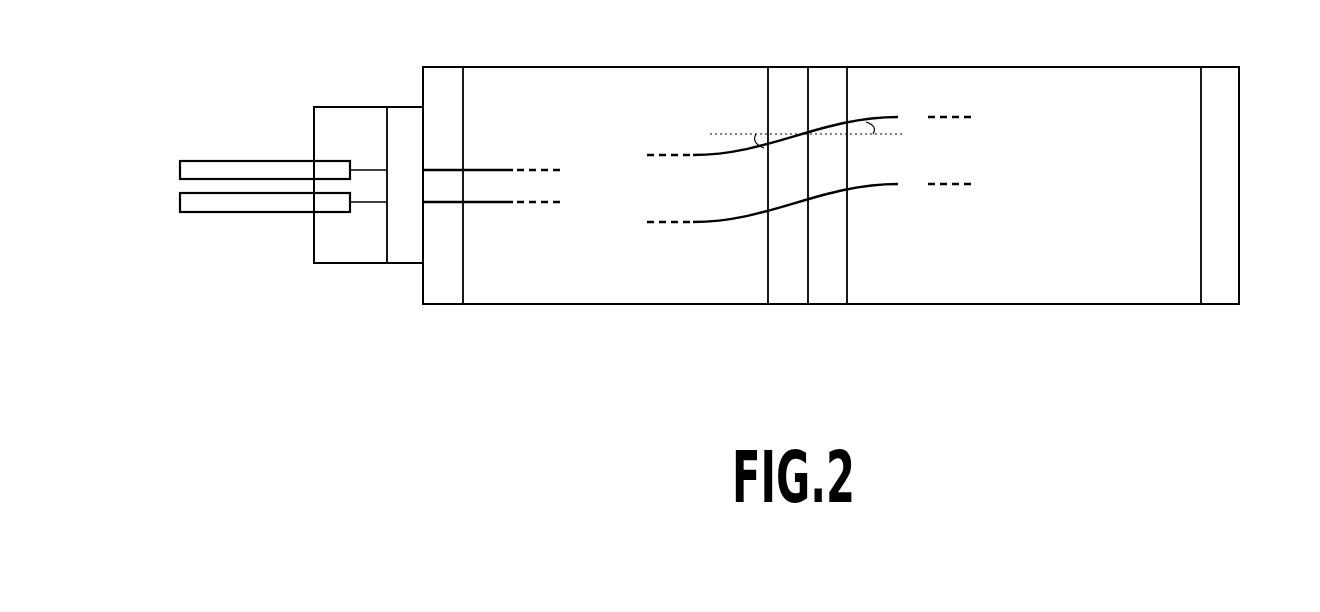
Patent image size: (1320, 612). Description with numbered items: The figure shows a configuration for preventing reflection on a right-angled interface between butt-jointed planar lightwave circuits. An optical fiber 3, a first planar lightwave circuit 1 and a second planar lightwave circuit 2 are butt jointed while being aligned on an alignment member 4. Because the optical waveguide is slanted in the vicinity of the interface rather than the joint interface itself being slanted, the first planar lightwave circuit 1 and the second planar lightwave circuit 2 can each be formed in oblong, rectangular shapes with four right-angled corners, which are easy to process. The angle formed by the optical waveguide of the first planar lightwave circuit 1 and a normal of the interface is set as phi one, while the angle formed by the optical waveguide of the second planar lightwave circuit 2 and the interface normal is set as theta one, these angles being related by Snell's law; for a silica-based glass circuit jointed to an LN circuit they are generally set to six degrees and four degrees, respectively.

The first planar lightwave circuit 1 is at (588, 88).
The second planar lightwave circuit 2 is at (1027, 88).
The optical fiber 3 is at (233, 160).
The alignment member 4 is at (349, 107).